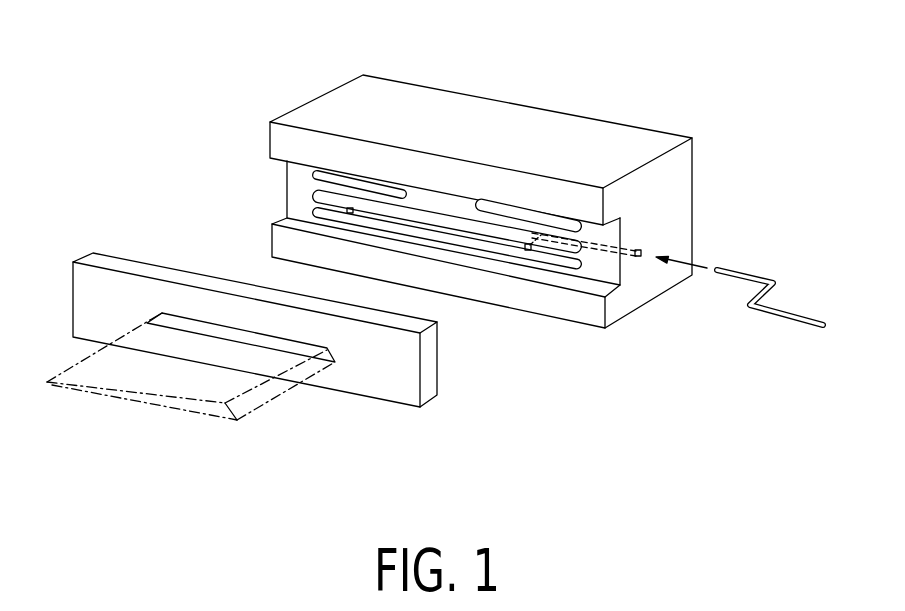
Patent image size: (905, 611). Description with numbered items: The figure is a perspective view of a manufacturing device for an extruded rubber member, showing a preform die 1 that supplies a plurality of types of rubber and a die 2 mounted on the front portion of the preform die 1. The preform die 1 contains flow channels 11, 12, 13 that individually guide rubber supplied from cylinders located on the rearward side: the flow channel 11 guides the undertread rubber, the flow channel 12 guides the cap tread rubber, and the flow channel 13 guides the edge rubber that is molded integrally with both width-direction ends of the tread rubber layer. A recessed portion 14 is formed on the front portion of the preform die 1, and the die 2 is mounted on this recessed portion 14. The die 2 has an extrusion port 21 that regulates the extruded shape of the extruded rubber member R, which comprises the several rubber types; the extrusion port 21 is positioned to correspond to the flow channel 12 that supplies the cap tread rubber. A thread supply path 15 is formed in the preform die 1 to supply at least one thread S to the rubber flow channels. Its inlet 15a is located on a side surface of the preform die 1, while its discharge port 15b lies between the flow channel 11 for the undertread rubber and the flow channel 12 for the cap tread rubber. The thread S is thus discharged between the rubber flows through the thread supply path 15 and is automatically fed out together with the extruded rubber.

The preform die 1 is at (488, 121).
The die 2 is at (378, 380).
The flow channel 11 is at (470, 242).
The flow channel 12 is at (515, 228).
The flow channel 13 is at (350, 182).
The recessed portion 14 is at (292, 180).
The thread supply path 15 is at (622, 240).
The inlet 15a is at (645, 256).
The discharge port 15b is at (347, 211).
The extrusion port 21 is at (262, 345).
The extruded rubber member R is at (167, 407).
The thread S is at (750, 271).